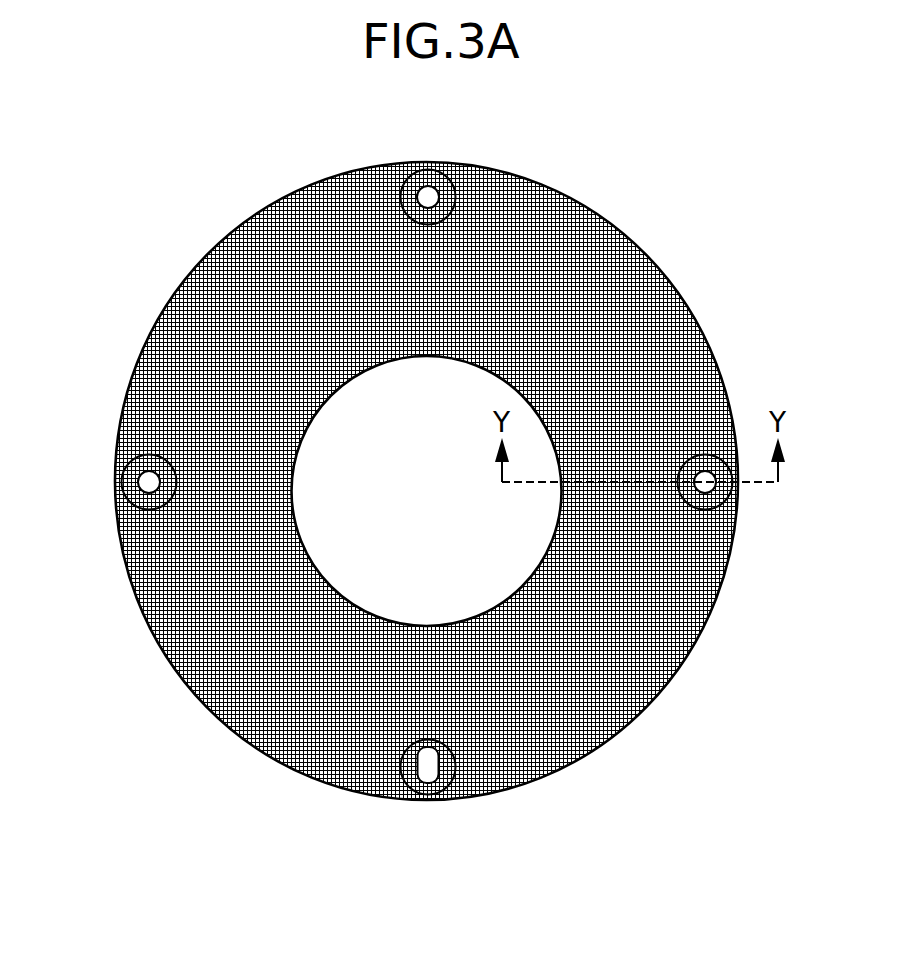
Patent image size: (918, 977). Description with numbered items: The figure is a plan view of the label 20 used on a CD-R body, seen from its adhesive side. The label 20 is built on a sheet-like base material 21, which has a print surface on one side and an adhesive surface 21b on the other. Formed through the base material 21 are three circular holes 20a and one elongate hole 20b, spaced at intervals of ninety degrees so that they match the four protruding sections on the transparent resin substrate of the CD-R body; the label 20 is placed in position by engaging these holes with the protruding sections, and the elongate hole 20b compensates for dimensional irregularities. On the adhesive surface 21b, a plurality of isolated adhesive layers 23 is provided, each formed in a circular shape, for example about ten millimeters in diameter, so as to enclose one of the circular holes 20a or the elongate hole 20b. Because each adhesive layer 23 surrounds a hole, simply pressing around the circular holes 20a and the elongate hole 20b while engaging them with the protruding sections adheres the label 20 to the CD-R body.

The label 20 is at (491, 131).
The circular holes 20a is at (405, 180).
The elongate hole 20b is at (445, 789).
The sheet-like base material 21 is at (643, 250).
The adhesive surface 21b is at (627, 683).
The adhesive layers 23 is at (427, 186).